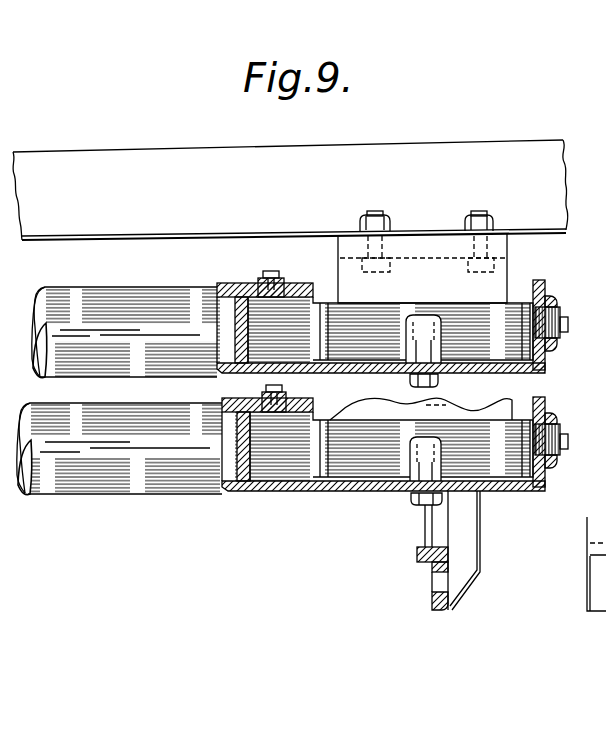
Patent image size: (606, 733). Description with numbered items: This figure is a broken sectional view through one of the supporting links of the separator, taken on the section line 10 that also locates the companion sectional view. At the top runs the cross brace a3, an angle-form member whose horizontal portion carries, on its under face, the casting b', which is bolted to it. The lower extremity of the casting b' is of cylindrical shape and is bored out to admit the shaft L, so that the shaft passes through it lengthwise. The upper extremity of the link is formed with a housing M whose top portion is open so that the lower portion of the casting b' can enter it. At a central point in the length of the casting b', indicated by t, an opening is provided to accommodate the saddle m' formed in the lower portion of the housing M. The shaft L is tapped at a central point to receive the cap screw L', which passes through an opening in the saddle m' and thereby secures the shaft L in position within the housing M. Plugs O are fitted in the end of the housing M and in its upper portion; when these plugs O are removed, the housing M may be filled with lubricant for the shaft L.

The section line 10- 10 is at (457, 400).
The cross brace a3 is at (492, 170).
The casting b' is at (472, 364).
The housing M is at (243, 296).
The plug O is at (277, 284).
The shaft L is at (390, 389).
The cap screw L' is at (421, 501).
The central opening point t is at (431, 314).
The saddle m' is at (381, 441).